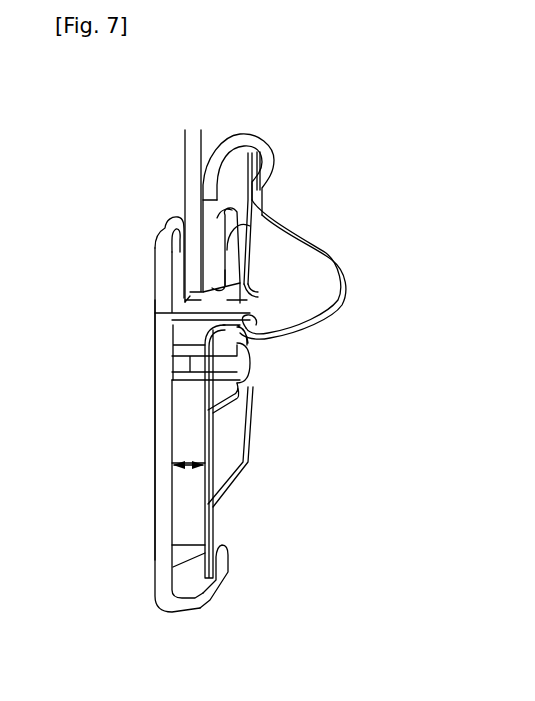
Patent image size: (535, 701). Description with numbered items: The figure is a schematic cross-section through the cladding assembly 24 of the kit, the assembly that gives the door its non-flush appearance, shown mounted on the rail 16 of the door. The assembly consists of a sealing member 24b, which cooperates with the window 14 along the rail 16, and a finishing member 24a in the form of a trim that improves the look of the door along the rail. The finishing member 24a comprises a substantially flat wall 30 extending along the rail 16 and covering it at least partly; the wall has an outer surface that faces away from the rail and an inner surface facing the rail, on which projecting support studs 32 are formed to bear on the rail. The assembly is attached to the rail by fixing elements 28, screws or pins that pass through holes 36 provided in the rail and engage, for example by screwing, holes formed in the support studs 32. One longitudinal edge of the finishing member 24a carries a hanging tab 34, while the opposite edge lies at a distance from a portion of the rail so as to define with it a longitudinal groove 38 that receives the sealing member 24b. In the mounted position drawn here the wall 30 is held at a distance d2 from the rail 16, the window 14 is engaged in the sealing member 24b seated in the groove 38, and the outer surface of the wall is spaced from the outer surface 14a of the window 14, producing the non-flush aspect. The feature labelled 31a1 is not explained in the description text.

The window 14 is at (183, 138).
The outer surface of the window 14a is at (185, 163).
The cladding assembly 24 is at (161, 224).
The finishing member 24a is at (140, 429).
The flat wall 30 is at (148, 318).
The sealing member 24b is at (239, 130).
The rail 16 is at (345, 250).
The longitudinal groove 38 is at (231, 246).
The hanging tab 34 is at (246, 318).
The fixing elements 28 is at (243, 363).
The holes 36 is at (243, 376).
The support studs 32 is at (218, 380).
The wall portion 31a1 is at (155, 423).
The distance d2 is at (192, 470).